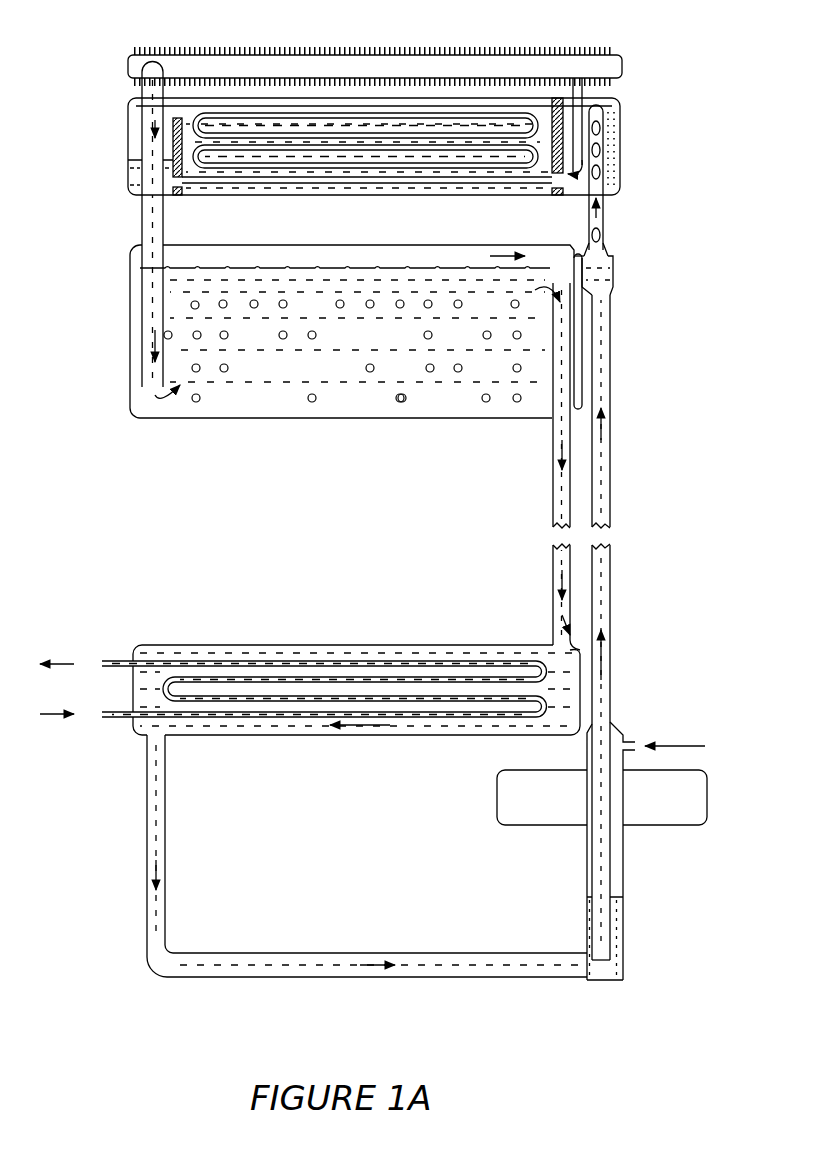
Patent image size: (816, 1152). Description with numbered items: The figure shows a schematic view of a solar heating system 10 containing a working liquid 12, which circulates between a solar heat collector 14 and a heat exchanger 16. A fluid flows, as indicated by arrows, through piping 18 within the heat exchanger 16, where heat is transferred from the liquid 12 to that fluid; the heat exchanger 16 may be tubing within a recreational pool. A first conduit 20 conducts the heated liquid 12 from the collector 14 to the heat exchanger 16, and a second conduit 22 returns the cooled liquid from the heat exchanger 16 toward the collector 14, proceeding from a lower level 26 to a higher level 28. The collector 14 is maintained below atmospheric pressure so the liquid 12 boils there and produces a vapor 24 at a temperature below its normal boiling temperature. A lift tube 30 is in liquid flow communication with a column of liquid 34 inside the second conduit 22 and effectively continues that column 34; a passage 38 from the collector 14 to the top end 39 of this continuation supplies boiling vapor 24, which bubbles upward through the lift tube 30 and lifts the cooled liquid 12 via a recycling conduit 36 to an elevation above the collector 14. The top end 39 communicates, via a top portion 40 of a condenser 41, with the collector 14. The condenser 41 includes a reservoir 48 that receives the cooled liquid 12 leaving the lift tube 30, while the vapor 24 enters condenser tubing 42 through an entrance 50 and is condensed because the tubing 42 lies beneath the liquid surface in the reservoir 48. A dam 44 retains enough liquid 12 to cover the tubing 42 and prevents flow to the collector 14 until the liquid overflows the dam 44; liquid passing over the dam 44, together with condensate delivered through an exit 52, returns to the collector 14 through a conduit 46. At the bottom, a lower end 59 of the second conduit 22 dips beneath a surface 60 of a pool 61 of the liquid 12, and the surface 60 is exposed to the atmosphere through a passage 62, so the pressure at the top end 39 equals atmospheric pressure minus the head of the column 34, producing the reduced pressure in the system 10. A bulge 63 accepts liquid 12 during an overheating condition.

The solar heating system 10 is at (102, 258).
The working liquid 12 is at (366, 352).
The solar heat collector 14 is at (130, 356).
The heat exchanger 16 is at (318, 645).
The piping 18 is at (105, 718).
The first conduit 20 is at (553, 460).
The second conduit 22 is at (611, 460).
The vapor 24 is at (378, 252).
The lower level 26 is at (640, 952).
The higher level 28 is at (636, 263).
The lift tube 30 is at (606, 216).
The column of liquid 34 is at (600, 345).
The recycling conduit 36 is at (350, 953).
The passage 38 is at (576, 248).
The top end 39 is at (602, 130).
The top portion 40 is at (362, 104).
The condenser 41 is at (340, 197).
The condenser tubing 42 is at (430, 128).
The dam 44 is at (175, 116).
The conduit 46 is at (142, 228).
The reservoir 48 is at (550, 130).
The entrance 50 is at (565, 108).
The exit 52 is at (175, 178).
The lower end 59 is at (604, 963).
The surface 60 is at (610, 897).
The pool 61 is at (618, 930).
The passage 62 is at (632, 748).
The bulge 63 is at (707, 802).